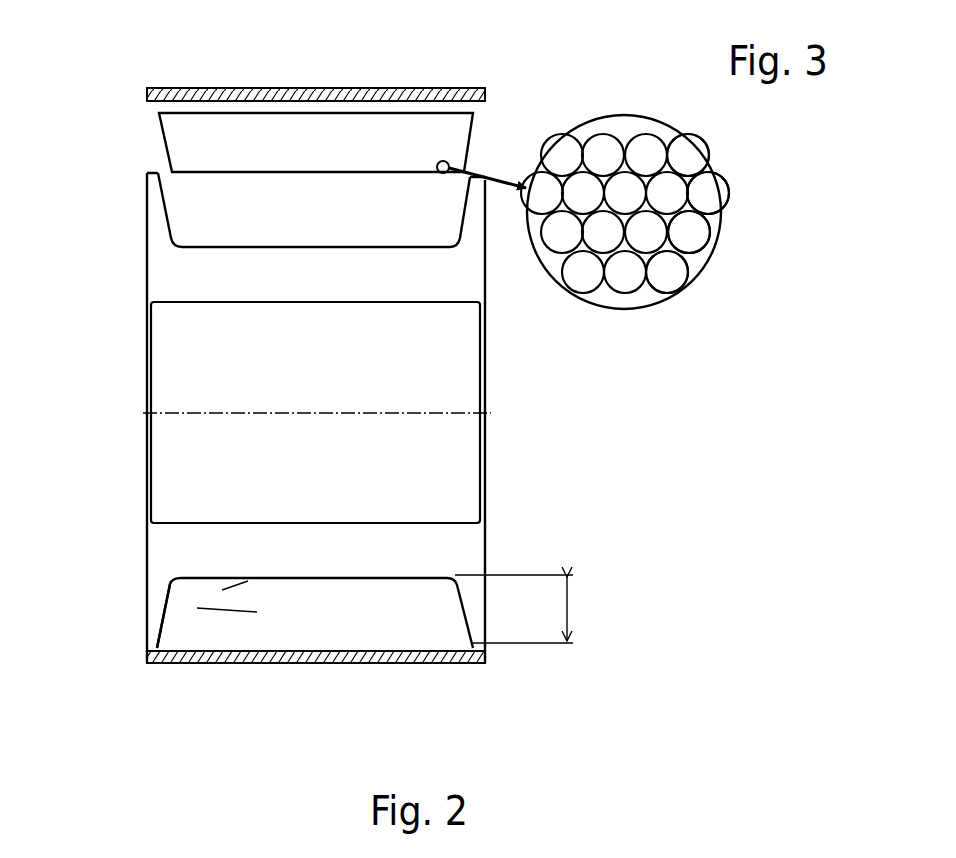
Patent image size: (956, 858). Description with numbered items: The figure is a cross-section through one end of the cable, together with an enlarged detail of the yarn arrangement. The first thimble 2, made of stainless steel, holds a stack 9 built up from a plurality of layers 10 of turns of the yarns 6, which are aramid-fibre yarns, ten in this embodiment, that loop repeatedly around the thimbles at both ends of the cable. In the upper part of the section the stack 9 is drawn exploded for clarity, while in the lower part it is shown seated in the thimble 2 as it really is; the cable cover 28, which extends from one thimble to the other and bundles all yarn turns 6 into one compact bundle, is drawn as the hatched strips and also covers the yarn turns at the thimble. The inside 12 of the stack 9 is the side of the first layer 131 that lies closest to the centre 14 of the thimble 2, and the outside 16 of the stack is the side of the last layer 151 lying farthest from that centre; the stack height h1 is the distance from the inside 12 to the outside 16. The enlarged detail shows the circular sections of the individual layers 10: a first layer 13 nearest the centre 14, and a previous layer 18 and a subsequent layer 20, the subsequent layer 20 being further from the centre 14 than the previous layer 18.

In FIG. 2, the first thimble 2 is at (100, 100).
In FIG. 2, the cable cover 28 is at (290, 88).
In FIG. 2, the yarns 6 is at (493, 120).
In FIG. 3, the yarns 6 is at (687, 158).
In FIG. 2, the centre of the thimble 14 is at (273, 405).
In FIG. 2, the inside of the stack 12 is at (207, 572).
In FIG. 2, the first layer 131 is at (222, 590).
In FIG. 2, the stack 9 is at (197, 608).
In FIG. 2, the last layer 151 is at (178, 640).
In FIG. 2, the outside of the stack 16 is at (238, 650).
In FIG. 2, the stack height h1 is at (570, 610).
In FIG. 3, the layers of yarn turns 10 is at (713, 155).
In FIG. 3, the subsequent layer 20 is at (853, 195).
In FIG. 3, the previous layer 18 is at (853, 233).
In FIG. 3, the first layer 13 is at (848, 272).